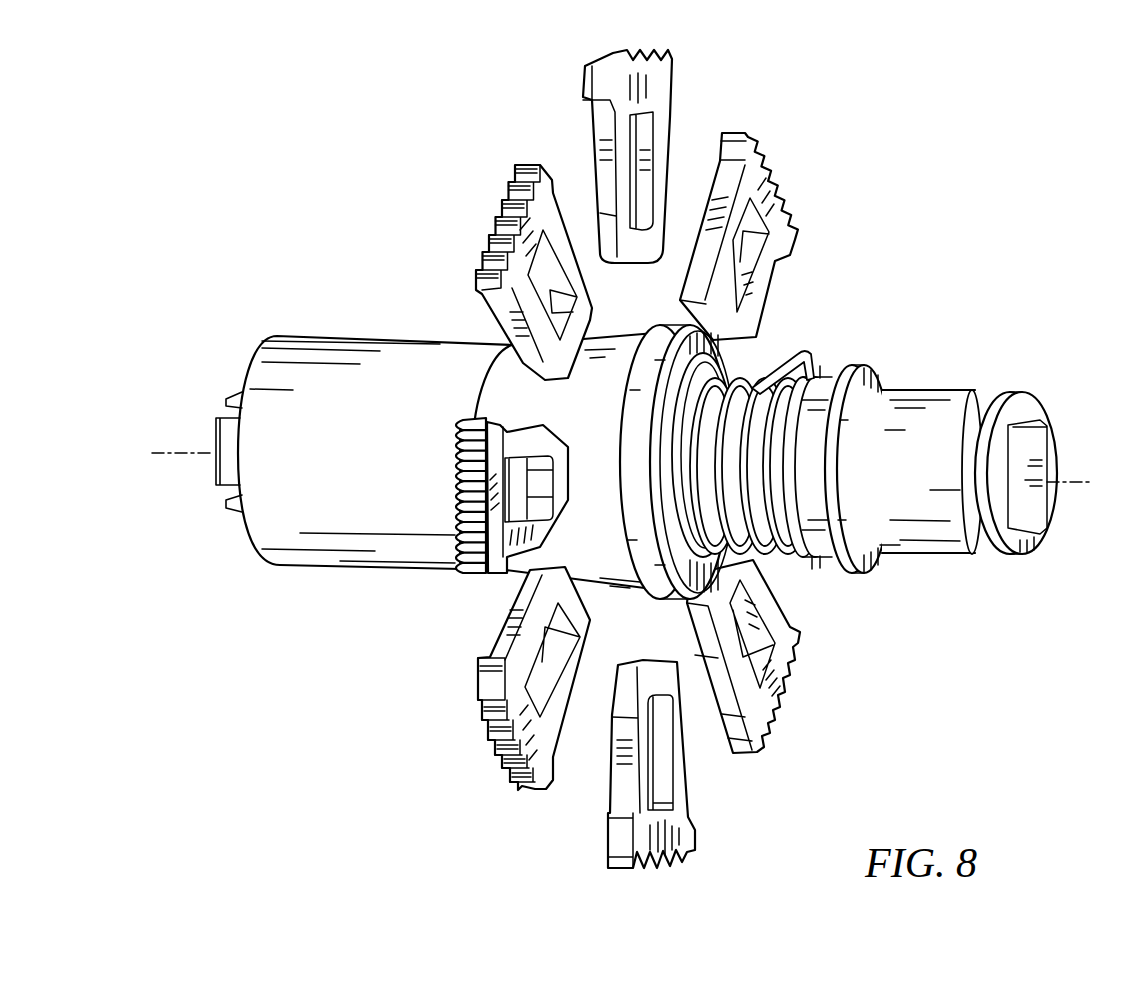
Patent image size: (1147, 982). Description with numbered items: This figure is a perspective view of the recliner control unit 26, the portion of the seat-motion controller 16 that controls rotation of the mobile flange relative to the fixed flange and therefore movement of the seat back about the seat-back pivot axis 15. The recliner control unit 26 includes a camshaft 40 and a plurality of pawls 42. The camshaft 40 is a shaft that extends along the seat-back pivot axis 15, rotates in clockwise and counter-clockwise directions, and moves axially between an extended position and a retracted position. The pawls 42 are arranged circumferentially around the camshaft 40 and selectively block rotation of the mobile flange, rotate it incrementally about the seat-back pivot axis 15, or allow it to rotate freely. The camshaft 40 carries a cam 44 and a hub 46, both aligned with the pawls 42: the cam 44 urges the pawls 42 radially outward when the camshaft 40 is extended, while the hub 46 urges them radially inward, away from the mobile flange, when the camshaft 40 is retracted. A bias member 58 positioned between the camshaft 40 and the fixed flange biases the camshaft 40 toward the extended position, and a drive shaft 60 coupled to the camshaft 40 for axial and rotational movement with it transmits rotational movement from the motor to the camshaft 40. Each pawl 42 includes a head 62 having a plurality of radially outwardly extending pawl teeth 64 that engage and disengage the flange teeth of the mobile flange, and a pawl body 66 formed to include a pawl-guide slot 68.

The seat-back pivot axis 15 is at (1090, 482).
The seat-motion controller 16 is at (638, 472).
The recliner control unit 26 is at (694, 473).
The camshaft 40 is at (423, 338).
The pawls 42 is at (672, 117).
The cam 44 is at (573, 512).
The hub 46 is at (496, 397).
The bias member 58 is at (772, 386).
The drive shaft 60 is at (923, 398).
The head 62 is at (644, 778).
The pawl teeth 64 is at (675, 868).
The pawl body 66 is at (606, 790).
The pawl-guide slot 68 is at (667, 772).